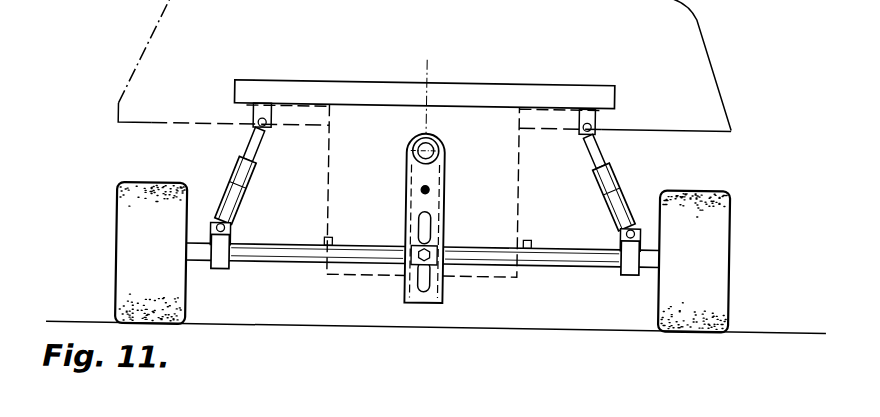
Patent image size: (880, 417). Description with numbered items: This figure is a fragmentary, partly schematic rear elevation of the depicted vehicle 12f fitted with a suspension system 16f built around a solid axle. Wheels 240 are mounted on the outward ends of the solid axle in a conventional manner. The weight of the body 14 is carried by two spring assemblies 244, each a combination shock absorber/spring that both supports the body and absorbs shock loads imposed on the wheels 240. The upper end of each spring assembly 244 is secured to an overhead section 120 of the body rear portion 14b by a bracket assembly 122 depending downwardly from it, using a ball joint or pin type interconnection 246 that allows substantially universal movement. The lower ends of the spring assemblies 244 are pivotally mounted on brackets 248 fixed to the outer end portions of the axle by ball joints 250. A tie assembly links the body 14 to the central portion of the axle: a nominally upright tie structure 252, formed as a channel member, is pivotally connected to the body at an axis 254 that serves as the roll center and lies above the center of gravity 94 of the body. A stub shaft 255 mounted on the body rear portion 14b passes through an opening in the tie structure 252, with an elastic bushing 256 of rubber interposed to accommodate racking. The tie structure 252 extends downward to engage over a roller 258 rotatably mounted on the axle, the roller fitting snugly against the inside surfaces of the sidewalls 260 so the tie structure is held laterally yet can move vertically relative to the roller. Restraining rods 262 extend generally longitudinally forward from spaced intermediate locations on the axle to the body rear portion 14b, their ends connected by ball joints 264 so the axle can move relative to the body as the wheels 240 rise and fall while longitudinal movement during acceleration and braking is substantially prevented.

The vehicle body 12f is at (120, 33).
The body 14 is at (700, 27).
The body rear portion 14b is at (565, 83).
The suspension system 16f is at (412, 336).
The center of gravity 94 is at (420, 190).
The overhead sections 120 is at (600, 83).
The bracket assemblies 122 is at (597, 118).
The wheels 240 is at (731, 216).
The spring assemblies 244 is at (622, 178).
The interconnection 246 is at (592, 127).
The brackets 248 is at (622, 243).
The ball joints 250 is at (626, 226).
The tie structure 252 is at (460, 201).
The axis 254 is at (418, 139).
The stub shaft 255 is at (440, 150).
The elastic bushing 256 is at (432, 143).
The roller 258 is at (423, 236).
The sidewalls 260 is at (444, 232).
The restraining rods 262 is at (330, 240).
The ball joints 264 is at (324, 245).